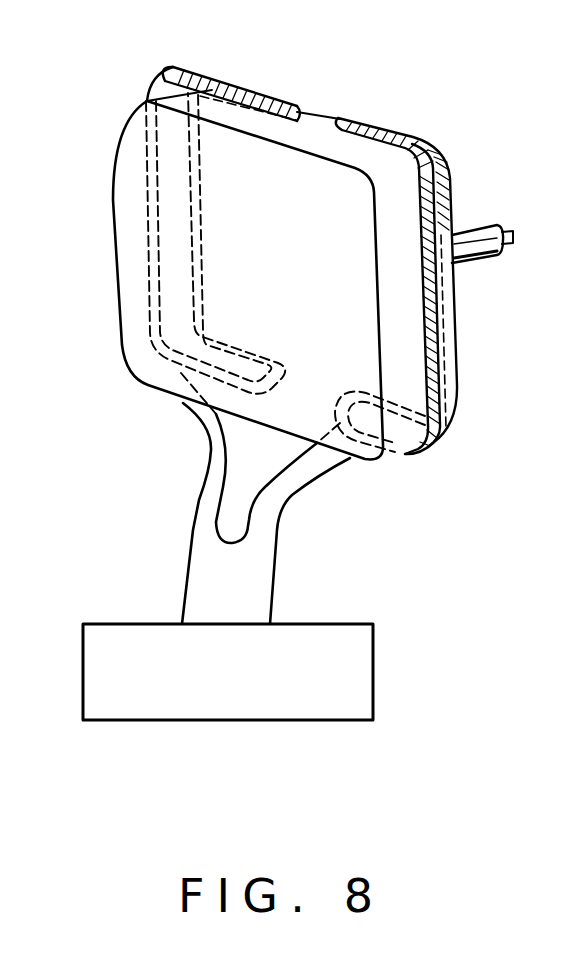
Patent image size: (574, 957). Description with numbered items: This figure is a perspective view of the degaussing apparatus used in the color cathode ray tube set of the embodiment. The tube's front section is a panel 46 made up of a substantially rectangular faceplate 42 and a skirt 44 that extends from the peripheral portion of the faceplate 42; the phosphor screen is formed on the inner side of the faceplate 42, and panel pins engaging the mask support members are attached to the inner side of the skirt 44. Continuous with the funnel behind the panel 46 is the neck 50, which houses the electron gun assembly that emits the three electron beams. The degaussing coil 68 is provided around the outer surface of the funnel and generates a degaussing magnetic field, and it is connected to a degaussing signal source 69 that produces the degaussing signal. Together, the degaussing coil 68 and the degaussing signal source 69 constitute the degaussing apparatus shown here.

The faceplate 42 is at (132, 237).
The skirt 44 is at (323, 133).
The panel 46 is at (222, 297).
The neck 50 is at (488, 237).
The degaussing coil 68 is at (173, 68).
The degaussing signal source 69 is at (373, 707).